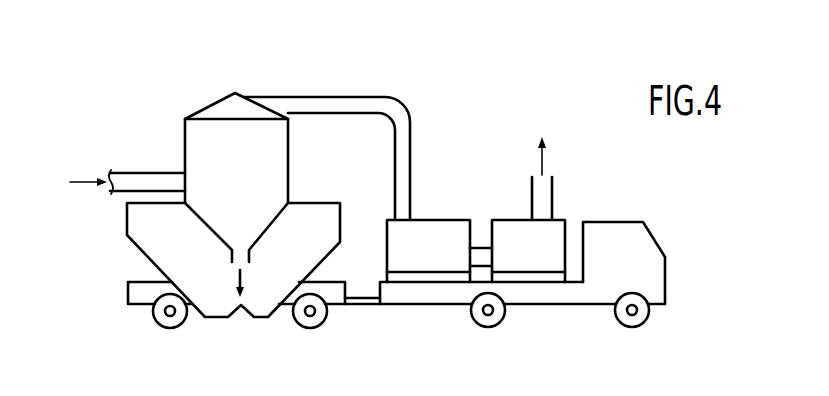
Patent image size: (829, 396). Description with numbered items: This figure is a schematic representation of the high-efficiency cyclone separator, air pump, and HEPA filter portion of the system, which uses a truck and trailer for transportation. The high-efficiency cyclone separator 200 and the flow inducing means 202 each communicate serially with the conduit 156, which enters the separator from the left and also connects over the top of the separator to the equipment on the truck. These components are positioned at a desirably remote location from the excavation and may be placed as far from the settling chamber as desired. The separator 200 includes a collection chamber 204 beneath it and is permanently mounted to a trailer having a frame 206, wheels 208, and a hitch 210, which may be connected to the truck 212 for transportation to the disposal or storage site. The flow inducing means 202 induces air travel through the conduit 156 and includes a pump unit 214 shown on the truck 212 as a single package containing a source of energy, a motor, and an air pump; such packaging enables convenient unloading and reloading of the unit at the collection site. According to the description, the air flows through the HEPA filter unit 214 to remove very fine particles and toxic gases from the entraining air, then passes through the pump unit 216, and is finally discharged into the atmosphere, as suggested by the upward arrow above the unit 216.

The conduit 156 is at (147, 158).
The high-efficiency cyclone separator 200 is at (176, 116).
The flow inducing means 202 is at (602, 185).
The collection chamber 204 is at (127, 222).
The frame 206 is at (128, 303).
The wheels 208 is at (165, 322).
The hitch 210 is at (356, 307).
The truck 212 is at (642, 260).
The pump unit 214 is at (442, 233).
The pump unit 216 is at (505, 233).